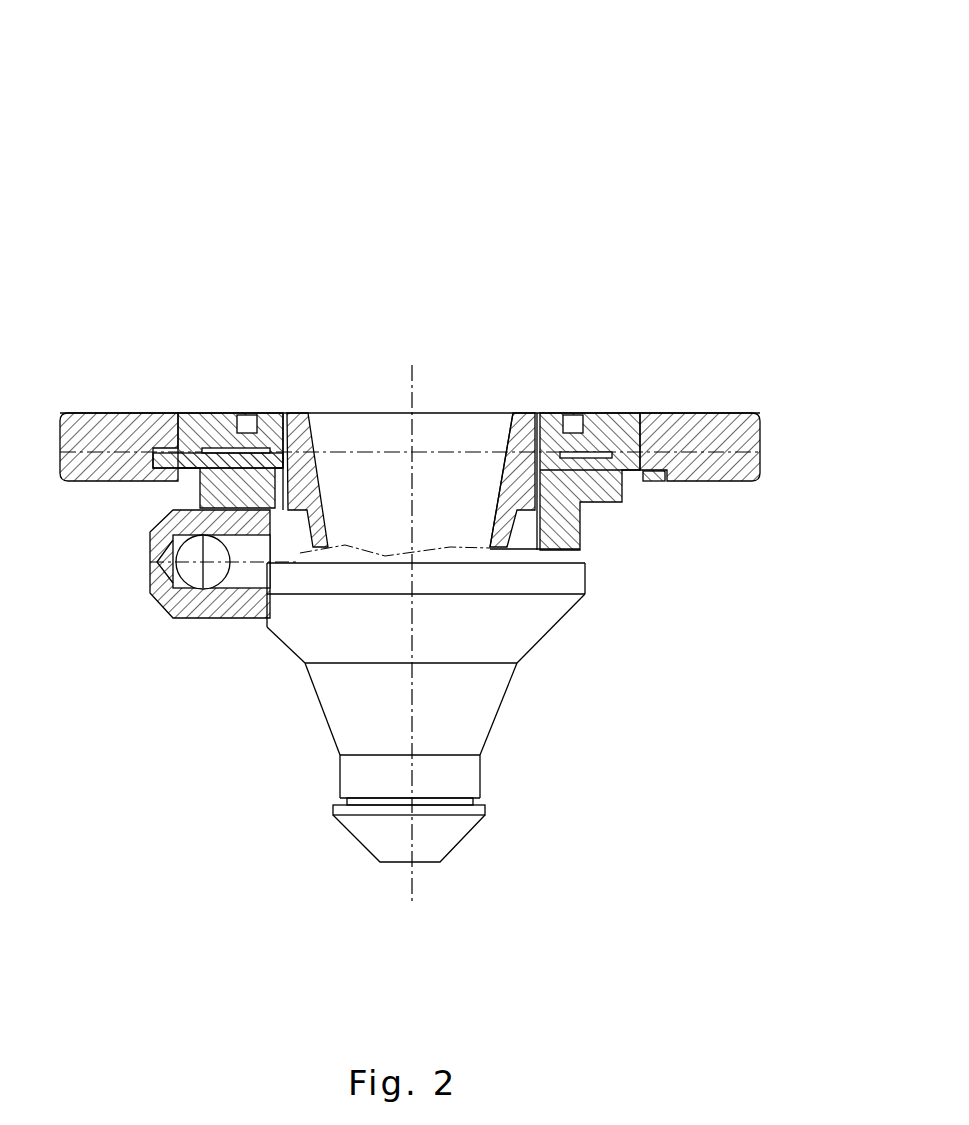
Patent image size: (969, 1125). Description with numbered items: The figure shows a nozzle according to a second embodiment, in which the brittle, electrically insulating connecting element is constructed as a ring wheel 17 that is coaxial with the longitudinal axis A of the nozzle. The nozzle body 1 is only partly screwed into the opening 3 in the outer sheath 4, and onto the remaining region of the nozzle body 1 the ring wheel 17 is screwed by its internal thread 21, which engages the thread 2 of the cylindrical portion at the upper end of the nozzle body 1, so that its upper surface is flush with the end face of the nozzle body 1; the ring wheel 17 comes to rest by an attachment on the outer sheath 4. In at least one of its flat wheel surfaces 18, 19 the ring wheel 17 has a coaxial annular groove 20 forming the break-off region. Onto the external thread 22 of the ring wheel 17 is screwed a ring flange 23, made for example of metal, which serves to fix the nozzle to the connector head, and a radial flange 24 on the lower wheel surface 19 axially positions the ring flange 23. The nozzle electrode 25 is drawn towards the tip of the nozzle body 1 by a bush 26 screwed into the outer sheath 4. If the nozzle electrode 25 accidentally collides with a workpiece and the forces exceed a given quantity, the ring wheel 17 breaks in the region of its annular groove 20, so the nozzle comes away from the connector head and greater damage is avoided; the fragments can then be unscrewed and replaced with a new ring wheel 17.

The nozzle body 1 is at (468, 346).
The thread 2 is at (528, 282).
The opening 3 is at (469, 282).
The outer sheath 4 is at (454, 609).
The ring wheel 17 is at (196, 263).
The flat wheel surface 18 is at (638, 346).
The lower wheel surface 19 is at (504, 531).
The annular groove 20 is at (452, 225).
The internal thread 21 is at (319, 282).
The external thread 22 is at (114, 311).
The ring flange 23 is at (749, 249).
The radial flange 24 is at (749, 517).
The nozzle electrode 25 is at (594, 830).
The bush 26 is at (580, 730).
The longitudinal axis A is at (239, 634).